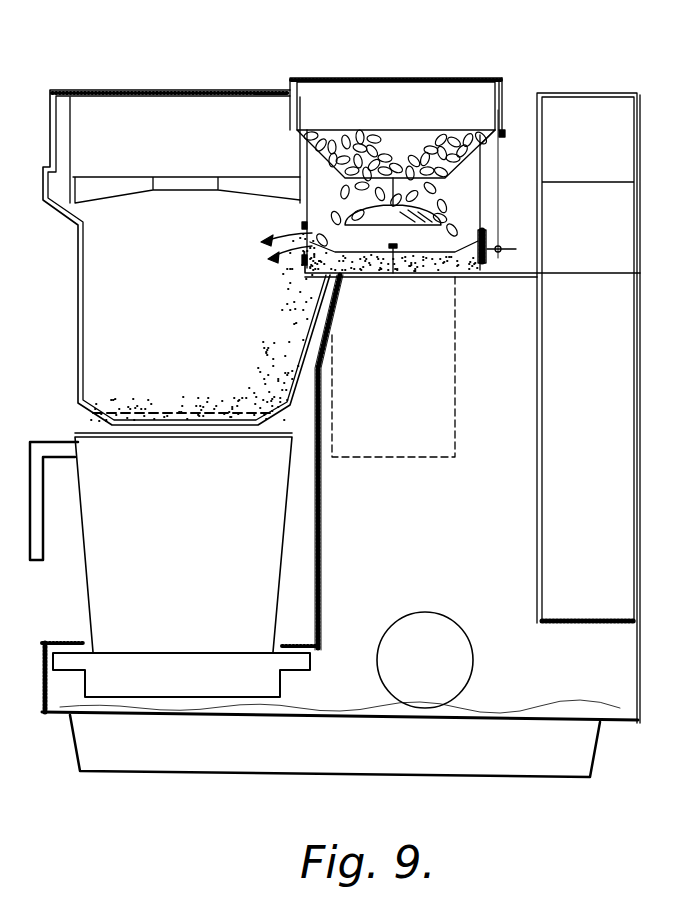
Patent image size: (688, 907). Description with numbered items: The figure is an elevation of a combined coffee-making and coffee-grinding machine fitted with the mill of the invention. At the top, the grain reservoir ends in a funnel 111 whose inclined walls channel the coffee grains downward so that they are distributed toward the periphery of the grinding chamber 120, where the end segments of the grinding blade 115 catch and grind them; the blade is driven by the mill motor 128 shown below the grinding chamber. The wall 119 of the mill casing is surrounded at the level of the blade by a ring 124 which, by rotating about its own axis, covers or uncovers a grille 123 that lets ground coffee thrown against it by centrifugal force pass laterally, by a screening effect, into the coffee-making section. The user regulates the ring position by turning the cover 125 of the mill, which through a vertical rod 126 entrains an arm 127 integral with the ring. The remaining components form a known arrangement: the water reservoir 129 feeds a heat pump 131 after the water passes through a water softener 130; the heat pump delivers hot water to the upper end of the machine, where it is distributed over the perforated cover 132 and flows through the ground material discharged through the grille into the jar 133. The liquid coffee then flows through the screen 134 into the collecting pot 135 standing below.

The funnel 111 is at (390, 153).
The grinding blade 115 is at (410, 262).
The wall of the mill casing 119 is at (480, 197).
The grinding chamber 120 is at (468, 176).
The grille 123 is at (307, 243).
The ring 124 is at (487, 233).
The cover of the mill 125 is at (438, 78).
The vertical rod 126 is at (470, 178).
The arm 127 is at (510, 258).
The mill motor 128 is at (442, 378).
The water reservoir 129 is at (588, 408).
The water softener 130 is at (425, 660).
The heat pump 131 is at (190, 678).
The perforated cover 132 is at (113, 188).
The jar 133 is at (107, 262).
The screen 134 is at (208, 413).
The collecting pot 135 is at (161, 542).